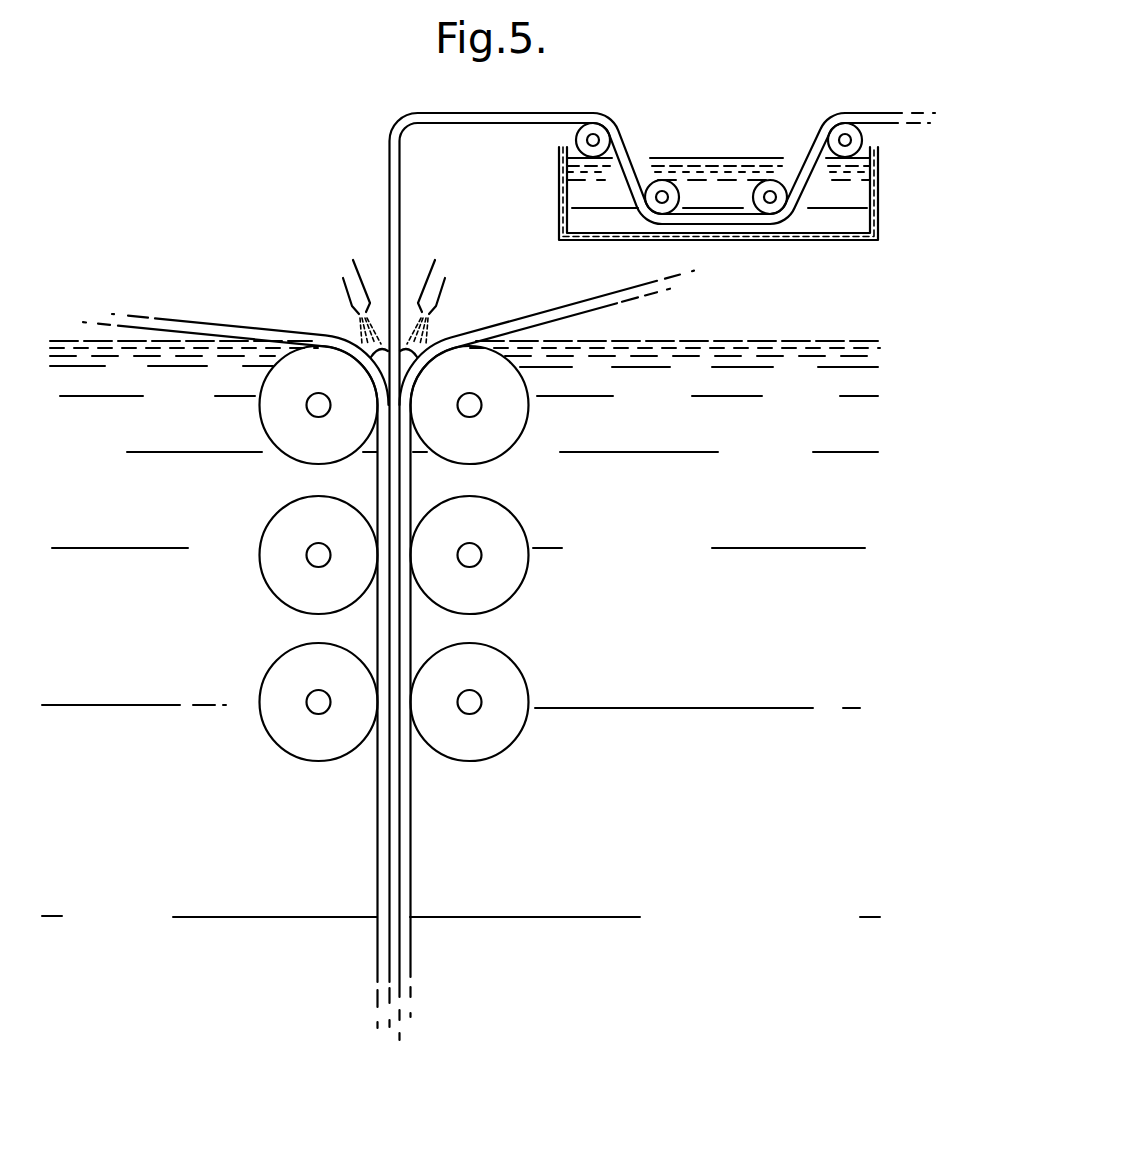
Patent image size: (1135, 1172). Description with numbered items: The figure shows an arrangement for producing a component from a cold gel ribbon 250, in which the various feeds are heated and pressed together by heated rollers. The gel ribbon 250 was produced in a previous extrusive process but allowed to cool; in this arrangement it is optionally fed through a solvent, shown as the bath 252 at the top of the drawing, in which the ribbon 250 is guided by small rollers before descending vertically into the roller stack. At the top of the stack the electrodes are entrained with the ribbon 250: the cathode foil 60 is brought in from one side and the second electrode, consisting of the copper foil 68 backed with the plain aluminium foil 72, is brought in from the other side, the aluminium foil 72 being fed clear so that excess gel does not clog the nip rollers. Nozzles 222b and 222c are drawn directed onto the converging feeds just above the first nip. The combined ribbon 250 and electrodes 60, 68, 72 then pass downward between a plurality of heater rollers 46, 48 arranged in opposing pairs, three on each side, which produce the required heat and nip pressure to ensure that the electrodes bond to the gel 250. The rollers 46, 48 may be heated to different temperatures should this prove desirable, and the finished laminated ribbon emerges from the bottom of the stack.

The cold gel ribbon 250 is at (867, 113).
The cathode foil 60 is at (229, 320).
The copper foil 68 is at (547, 641).
The aluminium foil 72 is at (540, 313).
The heated lamination roller 46 is at (273, 413).
The heated lamination roller 48 is at (520, 417).
The spray nozzle 222b is at (338, 279).
The spray nozzle 222c is at (451, 279).
The treatment bath 252 is at (585, 188).